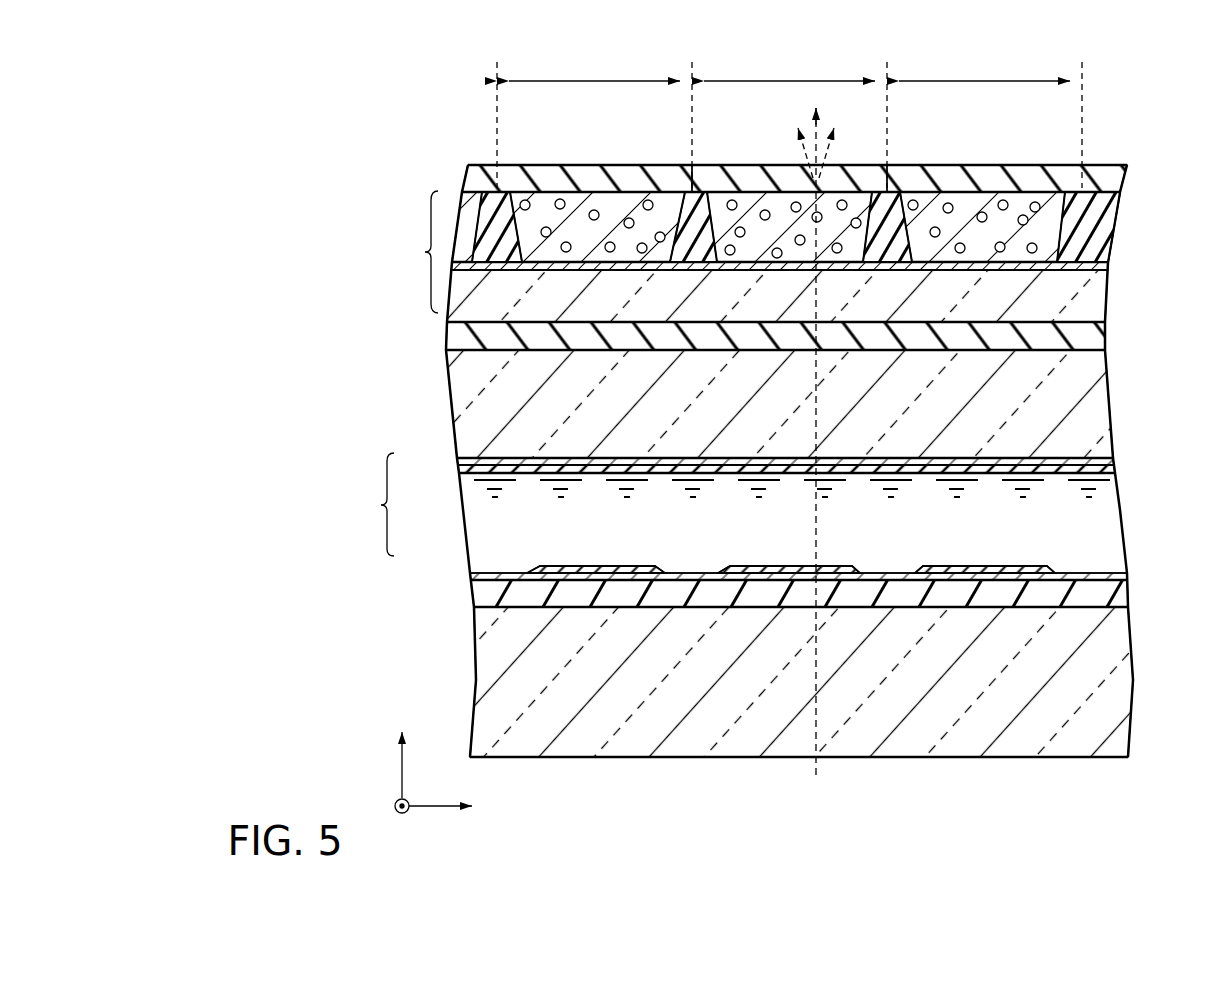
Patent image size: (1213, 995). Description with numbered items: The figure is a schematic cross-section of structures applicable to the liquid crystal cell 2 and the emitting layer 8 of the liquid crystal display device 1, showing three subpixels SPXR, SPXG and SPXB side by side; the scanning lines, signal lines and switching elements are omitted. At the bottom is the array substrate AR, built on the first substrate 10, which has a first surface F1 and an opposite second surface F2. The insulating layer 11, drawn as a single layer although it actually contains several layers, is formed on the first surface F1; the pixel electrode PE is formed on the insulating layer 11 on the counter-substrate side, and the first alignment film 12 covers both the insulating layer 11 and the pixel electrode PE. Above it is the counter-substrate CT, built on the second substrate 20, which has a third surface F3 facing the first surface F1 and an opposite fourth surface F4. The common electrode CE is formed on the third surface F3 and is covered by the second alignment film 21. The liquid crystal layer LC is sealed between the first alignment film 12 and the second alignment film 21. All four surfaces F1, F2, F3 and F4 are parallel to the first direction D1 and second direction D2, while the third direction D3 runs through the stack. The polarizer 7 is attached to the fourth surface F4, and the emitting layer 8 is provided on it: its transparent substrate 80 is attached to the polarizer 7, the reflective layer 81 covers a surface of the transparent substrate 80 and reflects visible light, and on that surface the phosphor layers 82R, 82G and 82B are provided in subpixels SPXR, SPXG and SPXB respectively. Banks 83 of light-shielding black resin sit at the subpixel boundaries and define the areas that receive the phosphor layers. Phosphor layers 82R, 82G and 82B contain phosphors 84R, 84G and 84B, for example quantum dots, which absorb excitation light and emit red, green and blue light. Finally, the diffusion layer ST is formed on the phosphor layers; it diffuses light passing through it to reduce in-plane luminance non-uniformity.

The liquid crystal display device 1 is at (1145, 108).
The liquid crystal cell 2 is at (378, 504).
The emitting layer 8 is at (762, 252).
The first substrate 10 is at (1120, 677).
The insulating layer 11 is at (1120, 595).
The first alignment film 12 is at (1127, 573).
The pixel electrode PE is at (1010, 578).
The liquid crystal layer LC is at (464, 506).
The array substrate AR is at (450, 568).
The counter-substrate CT is at (437, 423).
The common electrode CE is at (1108, 462).
The second alignment film 21 is at (1112, 468).
The second substrate 20 is at (1095, 403).
The polarizer 7 is at (1095, 339).
The transparent substrate 80 is at (1097, 294).
The reflective layer 81 is at (1097, 273).
The phosphor layer 82R is at (553, 184).
The phosphor layer 82G is at (735, 183).
The phosphor layer 82B is at (958, 183).
The bank 83 is at (492, 210).
The phosphor 84R is at (594, 210).
The phosphor 84G is at (765, 210).
The phosphor 84B is at (982, 212).
The diffusion layer ST is at (1037, 180).
The subpixel SPXR is at (594, 121).
The subpixel SPXG is at (795, 121).
The subpixel SPXB is at (990, 121).
The first surface F1 is at (890, 602).
The second surface F2 is at (940, 764).
The third surface F3 is at (731, 462).
The fourth surface F4 is at (838, 346).
The first direction D1 is at (459, 806).
The second direction D2 is at (387, 818).
The third direction D3 is at (402, 747).